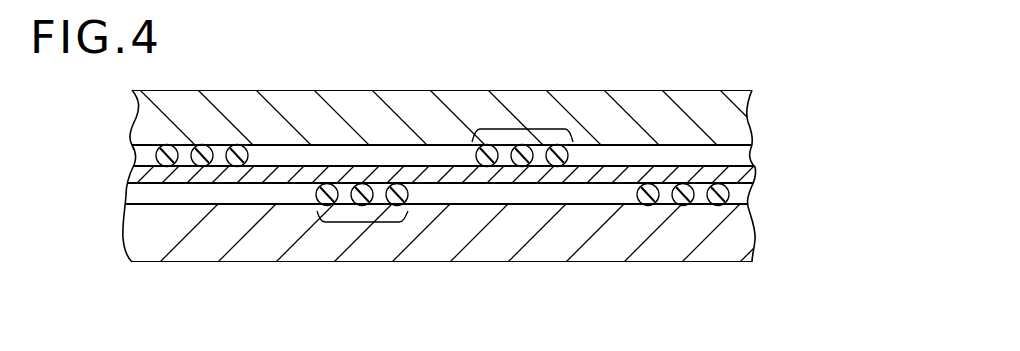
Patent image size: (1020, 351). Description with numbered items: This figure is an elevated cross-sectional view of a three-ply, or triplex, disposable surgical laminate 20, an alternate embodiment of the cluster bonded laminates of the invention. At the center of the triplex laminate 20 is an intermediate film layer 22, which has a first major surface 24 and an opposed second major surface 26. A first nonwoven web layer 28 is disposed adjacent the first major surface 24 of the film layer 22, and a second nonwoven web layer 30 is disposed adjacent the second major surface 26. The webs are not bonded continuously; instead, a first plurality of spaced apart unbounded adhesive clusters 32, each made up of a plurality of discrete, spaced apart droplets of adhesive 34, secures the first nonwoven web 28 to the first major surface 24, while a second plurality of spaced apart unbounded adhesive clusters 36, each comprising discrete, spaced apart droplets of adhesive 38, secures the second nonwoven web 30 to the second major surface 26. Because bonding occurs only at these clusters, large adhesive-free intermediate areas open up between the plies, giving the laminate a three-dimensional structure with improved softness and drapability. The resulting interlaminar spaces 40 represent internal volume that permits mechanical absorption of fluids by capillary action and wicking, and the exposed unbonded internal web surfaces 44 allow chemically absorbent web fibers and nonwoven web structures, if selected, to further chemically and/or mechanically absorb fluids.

The triplex laminate 20 is at (343, 267).
The intermediate film layer 22 is at (738, 177).
The first major surface 24 is at (627, 193).
The second major surface 26 is at (273, 162).
The first nonwoven web layer 28 is at (742, 232).
The second nonwoven web layer 30 is at (724, 120).
The first plurality of spaced apart unbounded adhesive clusters 32 is at (365, 223).
The droplets of adhesive 34 is at (650, 206).
The second plurality of spaced apart unbounded adhesive clusters 36 is at (525, 129).
The droplets of adhesive 38 is at (167, 144).
The interlaminar spaces 40 is at (402, 152).
The exposed unbonded internal web surfaces 44 is at (308, 145).